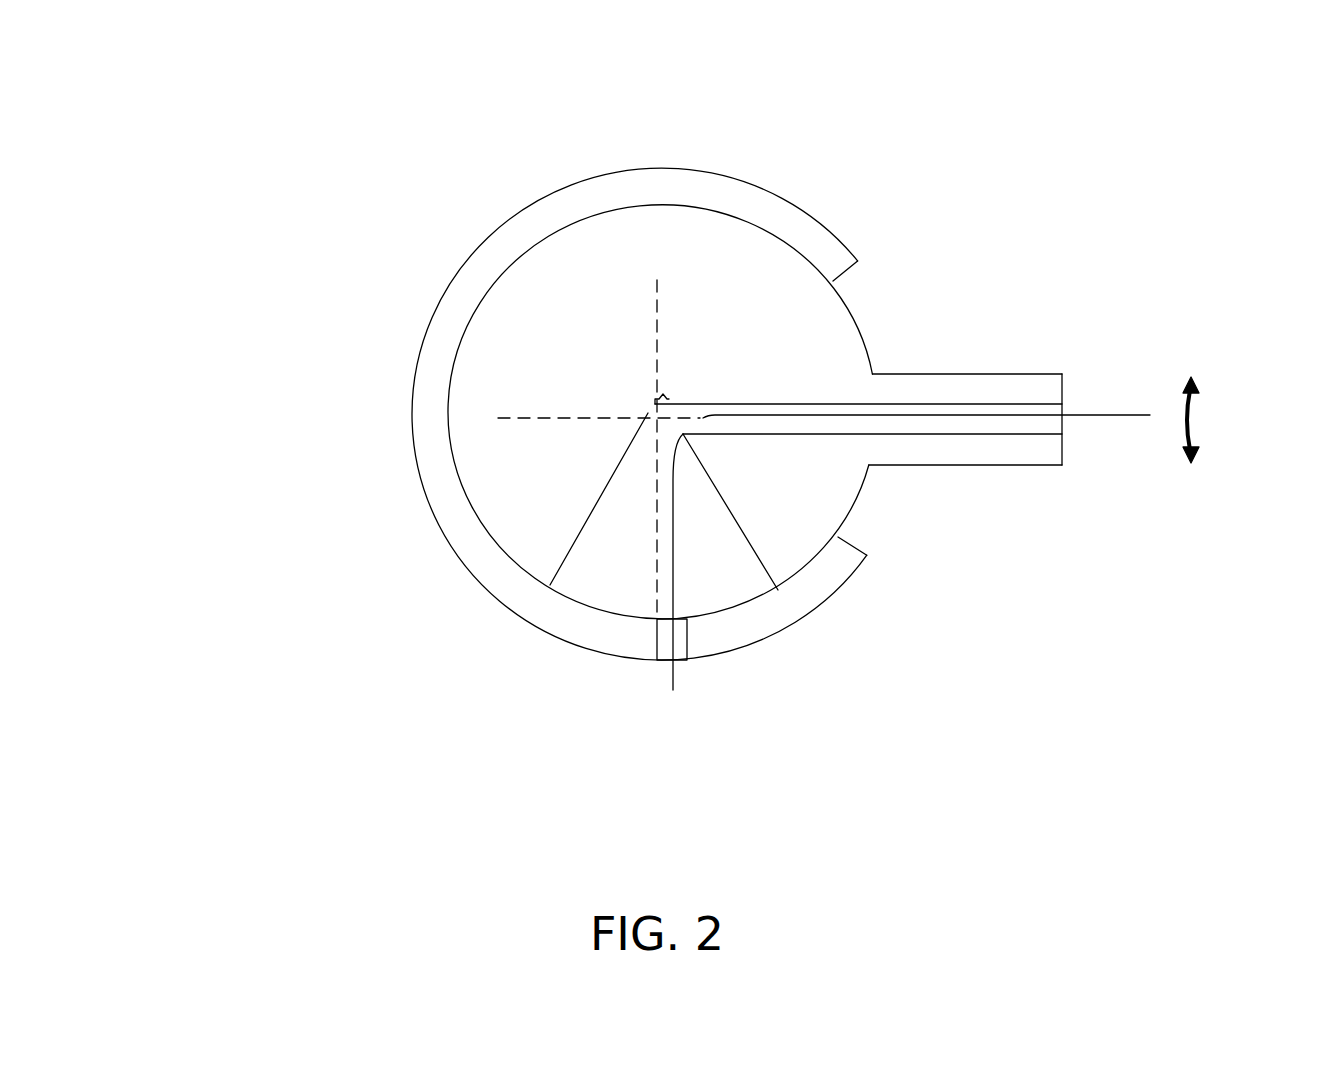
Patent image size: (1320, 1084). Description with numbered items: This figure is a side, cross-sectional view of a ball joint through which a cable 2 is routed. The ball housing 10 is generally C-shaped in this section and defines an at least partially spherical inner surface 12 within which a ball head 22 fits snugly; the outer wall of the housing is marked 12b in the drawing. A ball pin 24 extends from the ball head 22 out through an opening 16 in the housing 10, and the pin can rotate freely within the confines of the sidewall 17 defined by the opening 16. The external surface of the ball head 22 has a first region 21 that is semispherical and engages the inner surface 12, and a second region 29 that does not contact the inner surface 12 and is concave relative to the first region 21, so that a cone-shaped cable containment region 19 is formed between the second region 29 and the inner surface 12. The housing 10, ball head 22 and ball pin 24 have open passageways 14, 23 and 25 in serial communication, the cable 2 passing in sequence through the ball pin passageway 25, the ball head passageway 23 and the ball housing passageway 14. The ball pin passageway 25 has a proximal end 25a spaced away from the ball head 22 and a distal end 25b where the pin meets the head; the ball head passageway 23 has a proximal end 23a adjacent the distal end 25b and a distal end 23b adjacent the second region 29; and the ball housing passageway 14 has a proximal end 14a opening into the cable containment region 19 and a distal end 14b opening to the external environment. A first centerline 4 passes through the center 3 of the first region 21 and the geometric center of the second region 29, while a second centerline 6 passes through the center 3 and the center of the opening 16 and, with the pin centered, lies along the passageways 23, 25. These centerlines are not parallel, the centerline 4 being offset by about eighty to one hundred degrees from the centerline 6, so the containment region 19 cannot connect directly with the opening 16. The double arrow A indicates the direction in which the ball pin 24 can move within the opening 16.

The cable 2 is at (1110, 423).
The center 3 is at (648, 412).
The first centerline 4 is at (657, 340).
The second centerline 6 is at (572, 420).
The ball housing 10 is at (651, 383).
The inner surface 12 is at (748, 608).
The outer flange 12b is at (710, 172).
The ball housing passageway 14 is at (627, 613).
The proximal end 14a is at (657, 621).
The distal end 14b is at (675, 662).
The opening 16 is at (1030, 452).
The sidewall 17 is at (838, 276).
The cable containment region 19 is at (707, 545).
The first region 21 is at (865, 348).
The ball head 22 is at (495, 443).
The ball head passageway 23 is at (667, 305).
The proximal end 23a is at (873, 404).
The distal end 23b is at (670, 436).
The ball pin 24 is at (1050, 477).
The ball pin passageway 25 is at (1030, 472).
The proximal end 25a is at (1063, 404).
The distal end 25b is at (880, 422).
The second region 29 is at (566, 562).
The direction of movement A is at (1197, 412).